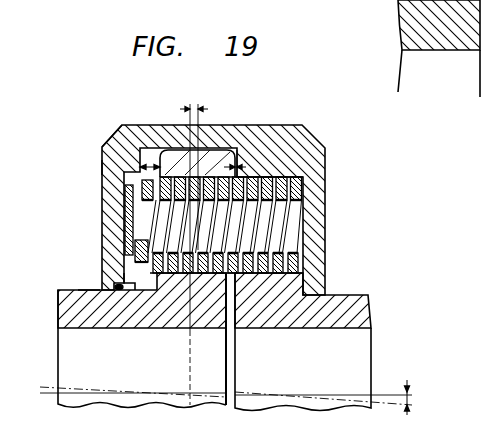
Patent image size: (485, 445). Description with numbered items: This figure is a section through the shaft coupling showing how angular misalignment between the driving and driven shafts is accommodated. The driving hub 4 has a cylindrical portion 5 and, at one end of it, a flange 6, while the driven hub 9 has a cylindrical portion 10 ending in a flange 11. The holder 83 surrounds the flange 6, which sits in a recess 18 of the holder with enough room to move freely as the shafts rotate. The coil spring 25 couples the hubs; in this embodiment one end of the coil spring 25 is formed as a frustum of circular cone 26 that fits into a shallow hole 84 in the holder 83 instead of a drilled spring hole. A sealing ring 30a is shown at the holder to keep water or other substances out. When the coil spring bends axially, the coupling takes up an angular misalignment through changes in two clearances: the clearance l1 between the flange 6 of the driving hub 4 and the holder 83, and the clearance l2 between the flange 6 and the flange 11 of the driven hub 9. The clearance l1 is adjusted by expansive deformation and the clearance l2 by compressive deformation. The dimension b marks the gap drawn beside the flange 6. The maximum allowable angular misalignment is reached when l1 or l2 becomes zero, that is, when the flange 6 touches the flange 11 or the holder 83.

The driving hub 4 is at (69, 298).
The cylindrical portion 5 is at (88, 303).
The flange 6 is at (208, 289).
The driven hub 9 is at (366, 296).
The cylindrical portion 10 is at (440, 42).
The flange 11 is at (304, 159).
The recess 18 is at (163, 148).
The coil spring 25 is at (304, 187).
The frustum of circular cone 26 is at (144, 265).
The seal 30a is at (135, 292).
The holder 83 is at (116, 144).
The shallow hole 84 is at (104, 164).
The clearance l1 is at (146, 148).
The clearance l2 is at (239, 148).
The clearance b is at (218, 148).